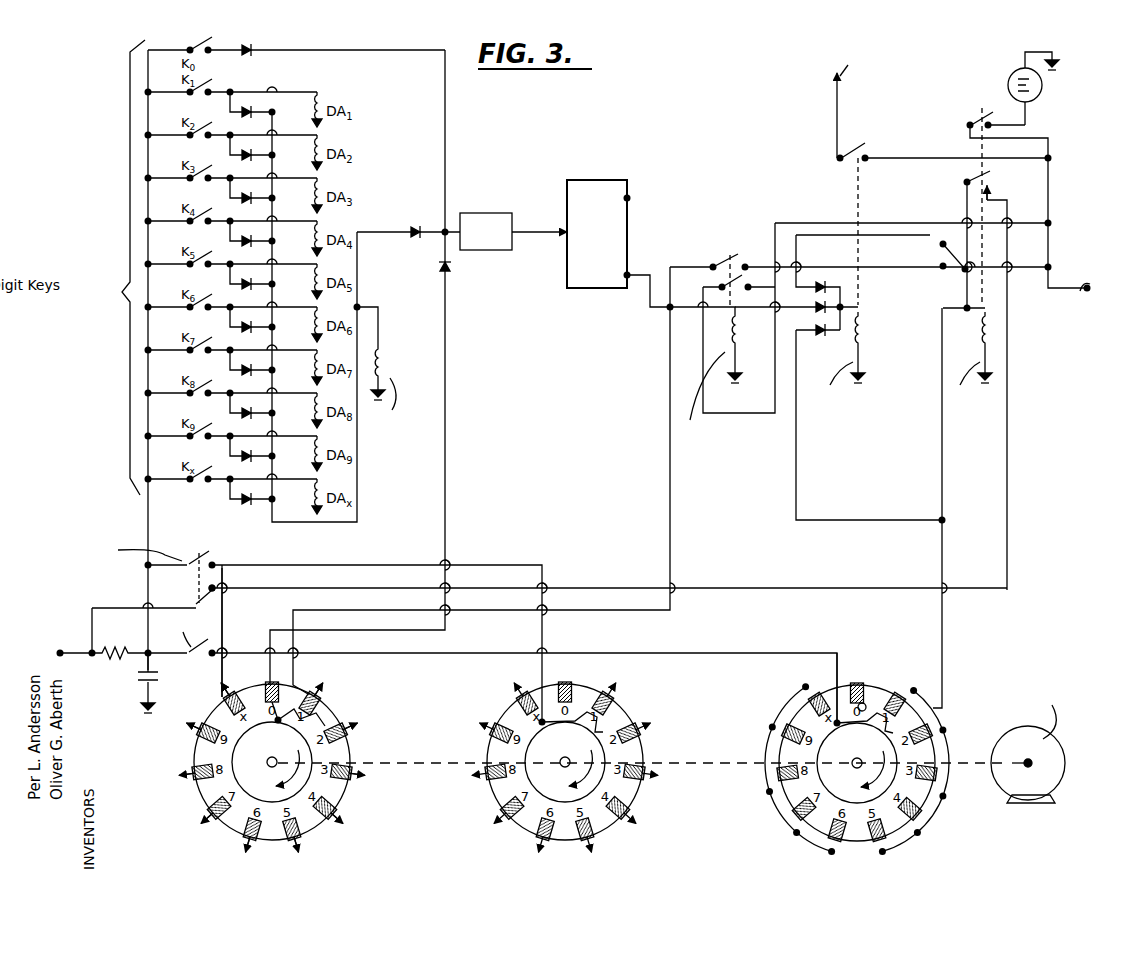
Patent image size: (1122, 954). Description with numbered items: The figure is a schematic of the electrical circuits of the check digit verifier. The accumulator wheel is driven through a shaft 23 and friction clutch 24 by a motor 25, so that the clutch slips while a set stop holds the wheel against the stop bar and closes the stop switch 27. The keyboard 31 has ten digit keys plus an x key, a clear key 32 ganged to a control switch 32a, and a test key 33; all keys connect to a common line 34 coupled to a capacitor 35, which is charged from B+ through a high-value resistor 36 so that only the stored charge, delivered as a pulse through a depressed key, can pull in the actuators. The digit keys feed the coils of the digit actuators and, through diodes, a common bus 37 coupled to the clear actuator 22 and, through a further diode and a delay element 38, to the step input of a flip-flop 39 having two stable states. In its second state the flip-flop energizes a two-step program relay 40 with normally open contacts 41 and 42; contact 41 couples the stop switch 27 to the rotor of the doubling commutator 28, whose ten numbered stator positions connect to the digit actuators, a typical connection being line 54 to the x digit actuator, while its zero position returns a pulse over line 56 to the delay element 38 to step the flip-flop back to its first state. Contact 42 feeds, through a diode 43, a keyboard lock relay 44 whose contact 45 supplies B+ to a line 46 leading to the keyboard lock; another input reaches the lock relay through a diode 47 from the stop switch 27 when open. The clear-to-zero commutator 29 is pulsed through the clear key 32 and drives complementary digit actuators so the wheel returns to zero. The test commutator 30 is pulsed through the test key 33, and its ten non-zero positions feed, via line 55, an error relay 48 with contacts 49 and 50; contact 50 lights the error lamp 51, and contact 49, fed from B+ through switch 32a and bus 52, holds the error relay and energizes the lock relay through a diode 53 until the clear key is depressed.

The clear actuator 22 is at (382, 359).
The shaft 23 is at (728, 762).
The friction clutch 24 is at (1032, 736).
The motor 25 is at (1053, 768).
The stop switch 27 is at (940, 249).
The doubling commutator 28 is at (272, 772).
The clear-to-zero commutator 29 is at (565, 766).
The test commutator 30 is at (857, 763).
The keyboard 31 is at (127, 305).
The clear key 32 is at (196, 556).
The control switch 32a is at (200, 598).
The test key 33 is at (197, 656).
The common line 34 is at (151, 521).
The capacitor 35 is at (141, 677).
The resistor 36 is at (130, 647).
The common bus 37 is at (312, 522).
The delay element 38 is at (495, 213).
The flip-flop 39 is at (591, 180).
The two-step program relay 40 is at (738, 344).
The relay contact 41 is at (736, 258).
The relay contact 42 is at (720, 281).
The diode 43 is at (817, 306).
The keyboard lock relay 44 is at (862, 340).
The relay contact 45 is at (853, 150).
The line 46 is at (838, 104).
The diode 47 is at (812, 282).
The error relay 48 is at (981, 336).
The relay contact 49 is at (978, 176).
The relay contact 50 is at (978, 116).
The error lamp 51 is at (1040, 100).
The bus 52 is at (796, 590).
The diode 53 is at (819, 334).
The line 54 is at (224, 639).
The line 55 is at (947, 659).
The line 56 is at (447, 437).